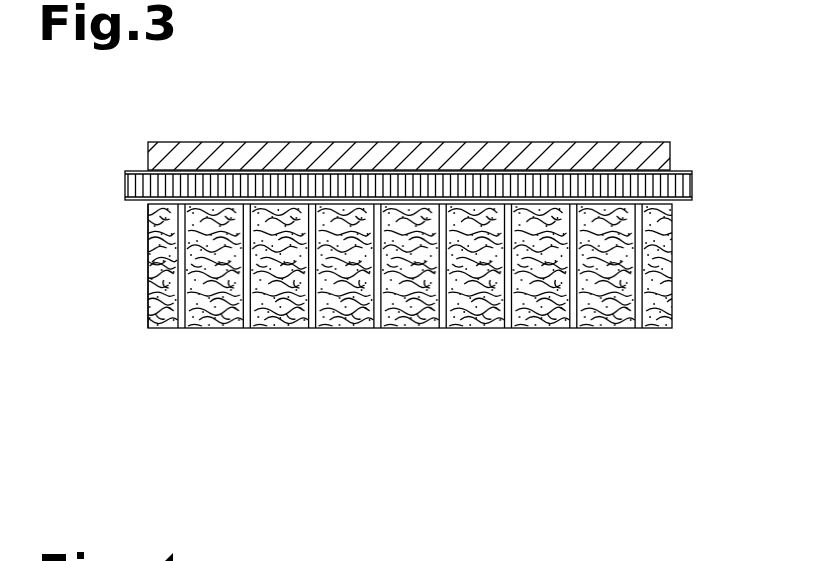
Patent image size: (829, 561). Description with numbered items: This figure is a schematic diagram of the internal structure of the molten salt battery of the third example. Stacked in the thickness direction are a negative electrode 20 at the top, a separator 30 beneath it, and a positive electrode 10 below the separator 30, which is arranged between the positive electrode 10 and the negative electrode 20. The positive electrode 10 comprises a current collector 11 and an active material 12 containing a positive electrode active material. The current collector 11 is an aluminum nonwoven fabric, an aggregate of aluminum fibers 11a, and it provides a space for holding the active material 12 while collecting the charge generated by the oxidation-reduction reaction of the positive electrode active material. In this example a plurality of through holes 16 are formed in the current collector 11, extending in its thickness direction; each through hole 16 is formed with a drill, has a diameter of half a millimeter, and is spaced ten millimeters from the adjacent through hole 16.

The positive electrode 10 is at (673, 263).
The current collector 11 is at (168, 259).
The aluminum fiber 11a is at (148, 322).
The active material 12 is at (170, 258).
The through hole 16 is at (243, 329).
The negative electrode 20 is at (672, 150).
The separator 30 is at (693, 183).